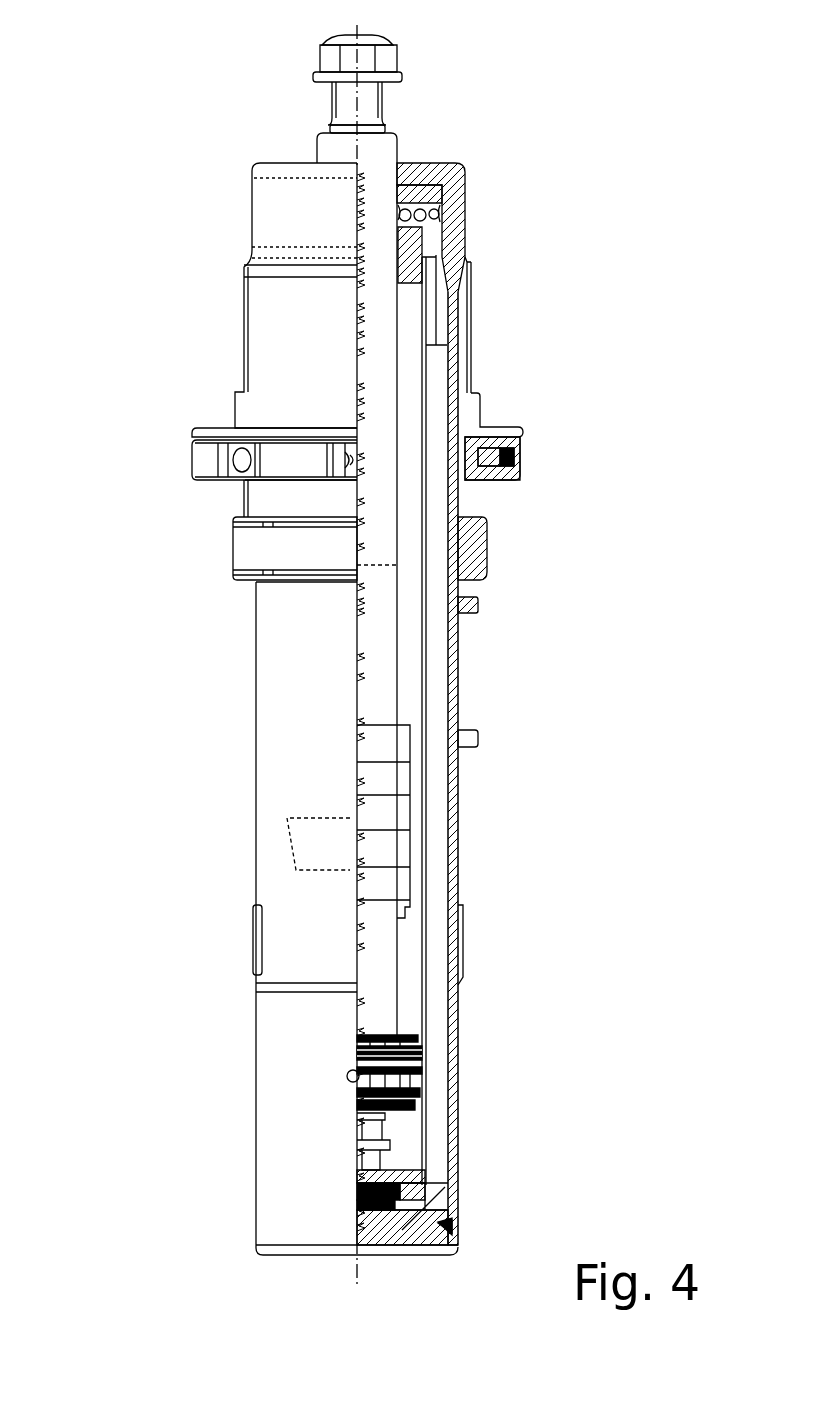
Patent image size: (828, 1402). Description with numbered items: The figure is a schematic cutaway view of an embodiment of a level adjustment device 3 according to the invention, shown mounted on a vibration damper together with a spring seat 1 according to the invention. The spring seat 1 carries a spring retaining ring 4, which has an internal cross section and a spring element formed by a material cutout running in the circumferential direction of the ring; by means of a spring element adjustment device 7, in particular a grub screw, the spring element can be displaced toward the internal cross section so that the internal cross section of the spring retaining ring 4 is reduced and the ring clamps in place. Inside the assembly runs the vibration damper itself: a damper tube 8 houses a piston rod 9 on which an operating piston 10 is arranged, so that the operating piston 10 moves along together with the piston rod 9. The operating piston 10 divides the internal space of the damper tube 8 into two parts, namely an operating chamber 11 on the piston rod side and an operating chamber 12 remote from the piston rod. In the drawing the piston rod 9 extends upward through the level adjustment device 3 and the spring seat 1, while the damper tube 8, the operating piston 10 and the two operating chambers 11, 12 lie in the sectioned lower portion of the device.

The spring seat 1 is at (515, 408).
The level adjustment device 3 is at (212, 341).
The spring retaining ring 4 is at (165, 460).
The spring element adjustment device 7 is at (520, 458).
The damper tube 8 is at (455, 1010).
The piston rod 9 is at (380, 152).
The operating piston 10 is at (400, 1080).
The operating chamber on the piston rod side 11 is at (405, 960).
The operating chamber remote from the piston rod 12 is at (400, 1147).